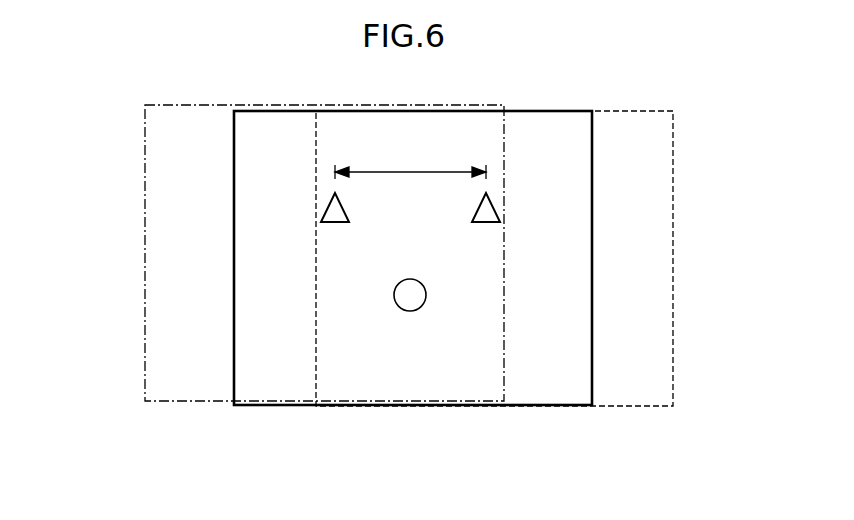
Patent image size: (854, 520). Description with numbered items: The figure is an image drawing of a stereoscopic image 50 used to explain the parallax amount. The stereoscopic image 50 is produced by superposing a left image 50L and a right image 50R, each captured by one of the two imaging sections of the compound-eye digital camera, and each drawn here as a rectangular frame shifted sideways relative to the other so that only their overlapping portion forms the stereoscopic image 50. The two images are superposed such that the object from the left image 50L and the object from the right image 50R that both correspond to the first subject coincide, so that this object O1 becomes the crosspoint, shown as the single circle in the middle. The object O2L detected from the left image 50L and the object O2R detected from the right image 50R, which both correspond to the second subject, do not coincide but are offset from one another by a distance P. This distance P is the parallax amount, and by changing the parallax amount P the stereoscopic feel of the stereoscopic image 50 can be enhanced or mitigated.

The stereoscopic image 50 is at (551, 391).
The left image 50L is at (145, 294).
The right image 50R is at (673, 257).
The parallax amount P is at (410, 163).
The object O1 is at (410, 300).
The object O2L is at (335, 216).
The object O2R is at (486, 216).